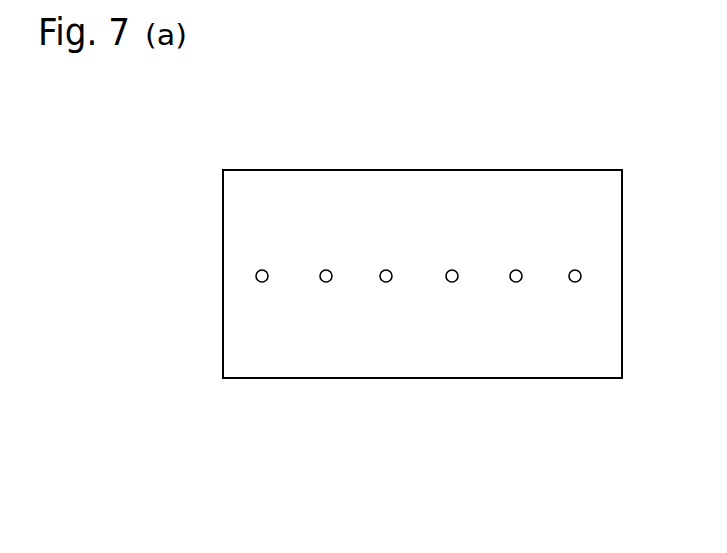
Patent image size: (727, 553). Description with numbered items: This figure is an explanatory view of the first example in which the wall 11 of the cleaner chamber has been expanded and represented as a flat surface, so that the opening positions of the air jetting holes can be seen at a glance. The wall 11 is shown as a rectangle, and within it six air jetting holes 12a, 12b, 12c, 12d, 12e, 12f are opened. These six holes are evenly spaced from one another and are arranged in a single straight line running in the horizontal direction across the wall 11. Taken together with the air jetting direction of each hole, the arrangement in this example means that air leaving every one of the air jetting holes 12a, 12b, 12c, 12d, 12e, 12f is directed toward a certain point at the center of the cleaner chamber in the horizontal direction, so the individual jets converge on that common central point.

The wall 11 is at (557, 200).
The air jetting hole 12a is at (261, 283).
The air jetting hole 12b is at (325, 283).
The air jetting hole 12c is at (385, 283).
The air jetting hole 12d is at (451, 283).
The air jetting hole 12e is at (515, 283).
The air jetting hole 12f is at (574, 283).